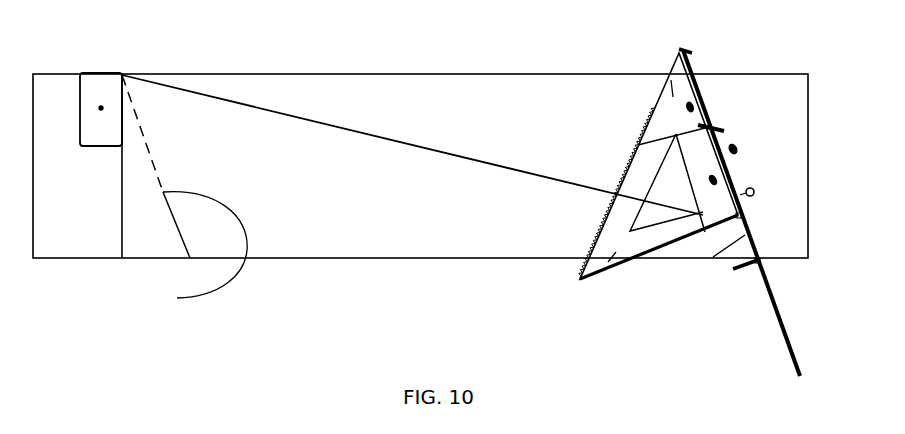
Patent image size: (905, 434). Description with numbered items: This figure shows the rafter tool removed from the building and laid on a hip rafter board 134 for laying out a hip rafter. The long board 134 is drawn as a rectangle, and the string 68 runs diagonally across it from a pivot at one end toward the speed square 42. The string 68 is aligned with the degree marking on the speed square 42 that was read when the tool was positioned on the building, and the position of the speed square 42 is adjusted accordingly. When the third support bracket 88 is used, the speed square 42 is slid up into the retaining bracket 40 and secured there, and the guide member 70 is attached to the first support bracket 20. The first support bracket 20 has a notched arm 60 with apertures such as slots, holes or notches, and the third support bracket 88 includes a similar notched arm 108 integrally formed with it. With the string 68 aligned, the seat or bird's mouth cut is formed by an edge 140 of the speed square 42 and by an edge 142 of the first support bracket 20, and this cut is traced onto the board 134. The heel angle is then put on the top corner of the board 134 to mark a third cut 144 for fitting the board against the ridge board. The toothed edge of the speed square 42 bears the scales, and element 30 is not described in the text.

The first support bracket 20 is at (708, 126).
The pivot block 30 is at (107, 73).
The retaining bracket 40 is at (671, 80).
The speed square 42 is at (597, 278).
The notched arm 60 is at (688, 50).
The string 68 is at (321, 118).
The guide member 70 is at (733, 265).
The third support bracket 88 is at (718, 192).
The notched arm 108 is at (724, 131).
The board 134 is at (452, 103).
The edge 140 is at (685, 247).
The edge 142 is at (713, 257).
The third cut 144 is at (184, 194).